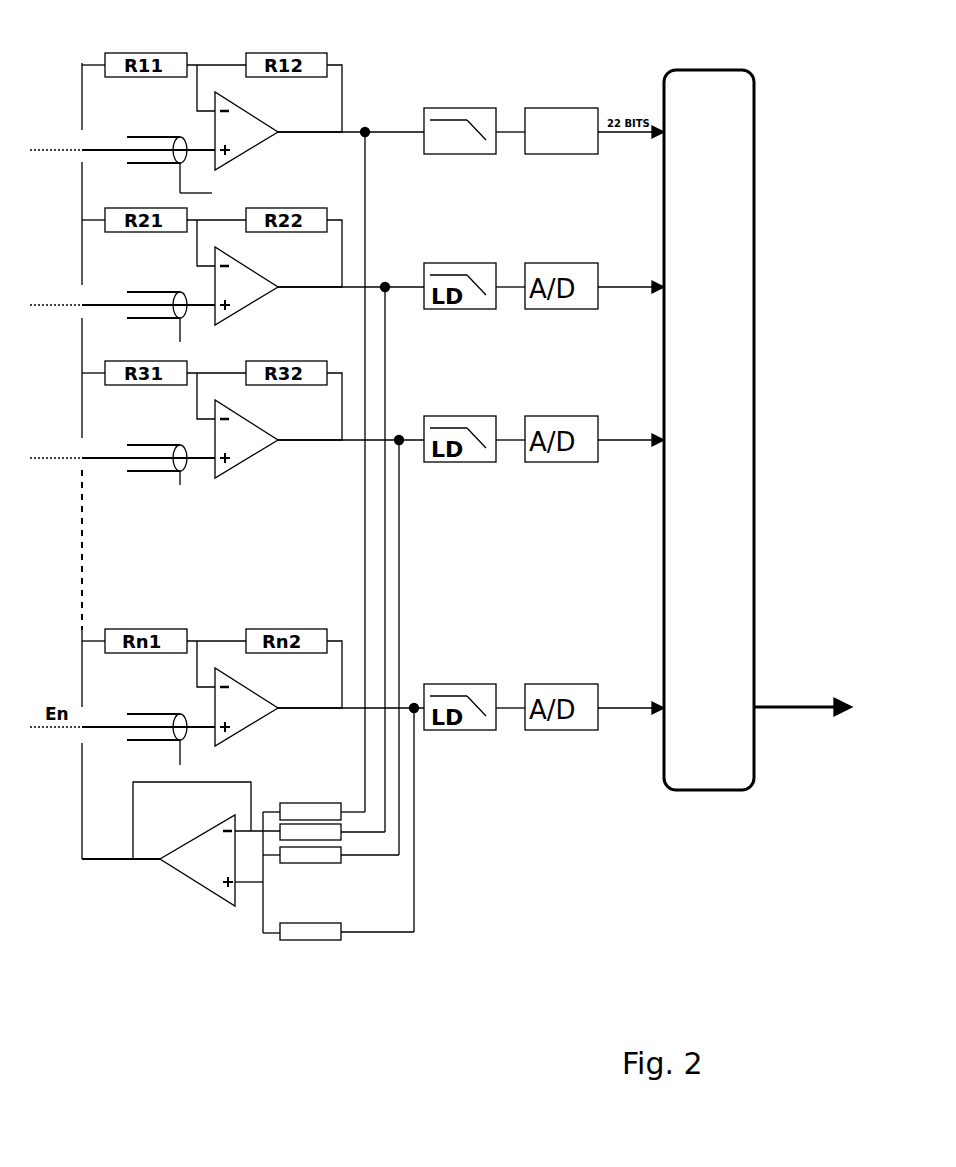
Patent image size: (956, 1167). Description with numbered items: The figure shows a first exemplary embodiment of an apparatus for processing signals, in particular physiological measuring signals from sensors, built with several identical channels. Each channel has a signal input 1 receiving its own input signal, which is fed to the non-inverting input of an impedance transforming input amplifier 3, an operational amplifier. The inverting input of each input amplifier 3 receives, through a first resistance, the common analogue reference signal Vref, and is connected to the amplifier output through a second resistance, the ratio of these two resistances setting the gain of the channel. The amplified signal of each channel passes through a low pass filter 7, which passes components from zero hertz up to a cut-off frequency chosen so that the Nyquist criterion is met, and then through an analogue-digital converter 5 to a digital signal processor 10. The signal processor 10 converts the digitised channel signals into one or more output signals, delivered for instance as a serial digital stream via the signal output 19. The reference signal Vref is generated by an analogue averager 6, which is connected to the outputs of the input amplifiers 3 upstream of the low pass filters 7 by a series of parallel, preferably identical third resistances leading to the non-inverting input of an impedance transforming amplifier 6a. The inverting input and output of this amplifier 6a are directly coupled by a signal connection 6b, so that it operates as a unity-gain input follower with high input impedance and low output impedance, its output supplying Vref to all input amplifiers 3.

The signal input 1 is at (66, 162).
The impedance transforming input amplifier 3 is at (230, 86).
The analogue-digital converter 5 is at (563, 94).
The analogue averager 6 is at (203, 914).
The impedance transforming amplifier 6a is at (183, 856).
The signal connection 6b is at (252, 782).
The low pass filter 7 is at (464, 94).
The digital signal processor 10 is at (708, 87).
The signal output 19 is at (778, 704).